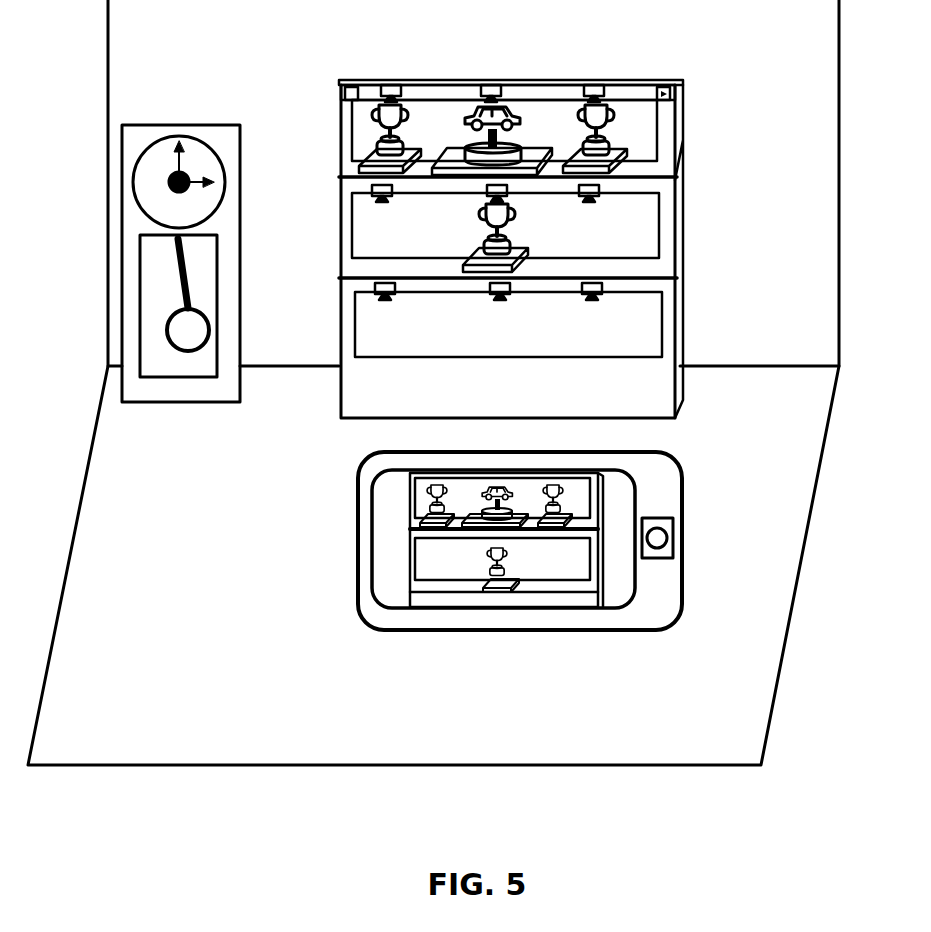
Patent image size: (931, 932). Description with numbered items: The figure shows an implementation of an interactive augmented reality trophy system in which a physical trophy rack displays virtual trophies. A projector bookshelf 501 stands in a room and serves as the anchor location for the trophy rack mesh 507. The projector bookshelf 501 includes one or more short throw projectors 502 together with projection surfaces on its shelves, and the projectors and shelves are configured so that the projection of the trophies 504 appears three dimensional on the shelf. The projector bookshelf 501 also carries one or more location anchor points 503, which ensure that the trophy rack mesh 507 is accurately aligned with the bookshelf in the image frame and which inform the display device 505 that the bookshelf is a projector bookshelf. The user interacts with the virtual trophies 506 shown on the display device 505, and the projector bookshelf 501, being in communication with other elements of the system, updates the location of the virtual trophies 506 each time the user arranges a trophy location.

The projector bookshelf 501 is at (514, 221).
The short throw projector 502 is at (385, 84).
The location anchor point 503 is at (650, 80).
The trophy 504 is at (462, 108).
The display device of the interactive augmented reality trophy system 505 is at (531, 509).
The virtual trophy 506 is at (488, 480).
The trophy rack mesh 507 is at (405, 490).